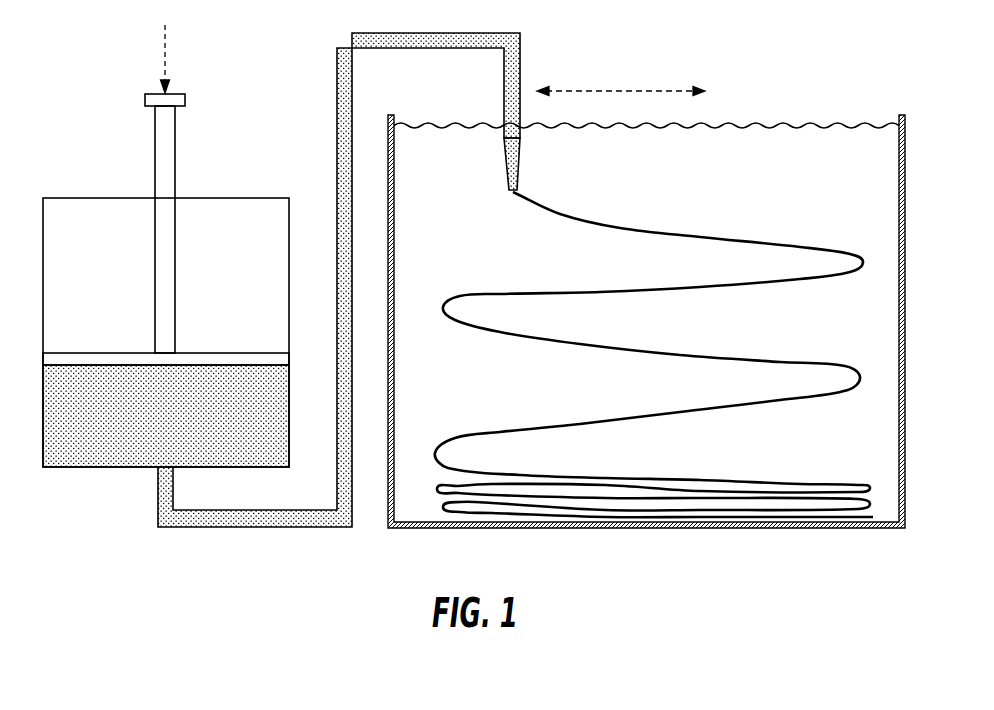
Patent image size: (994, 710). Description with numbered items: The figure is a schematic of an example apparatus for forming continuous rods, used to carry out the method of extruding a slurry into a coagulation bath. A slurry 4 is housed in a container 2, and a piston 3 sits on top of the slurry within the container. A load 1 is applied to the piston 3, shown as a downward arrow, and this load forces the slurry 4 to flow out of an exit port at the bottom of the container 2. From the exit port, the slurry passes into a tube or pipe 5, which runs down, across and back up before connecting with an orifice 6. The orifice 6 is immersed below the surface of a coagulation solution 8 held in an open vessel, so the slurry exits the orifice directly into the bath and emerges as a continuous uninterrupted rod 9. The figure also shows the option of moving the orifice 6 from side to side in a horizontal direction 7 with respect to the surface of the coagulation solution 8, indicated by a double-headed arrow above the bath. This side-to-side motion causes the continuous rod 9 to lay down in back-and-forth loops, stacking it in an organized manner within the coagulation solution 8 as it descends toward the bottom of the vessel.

The load 1 is at (165, 53).
The container 2 is at (103, 197).
The piston 3 is at (103, 352).
The slurry 4 is at (176, 428).
The tube or pipe 5 is at (256, 528).
The orifice 6 is at (505, 165).
The horizontal direction 7 is at (627, 90).
The coagulation solution 8 is at (853, 179).
The continuous uninterrupted rod 9 is at (628, 222).